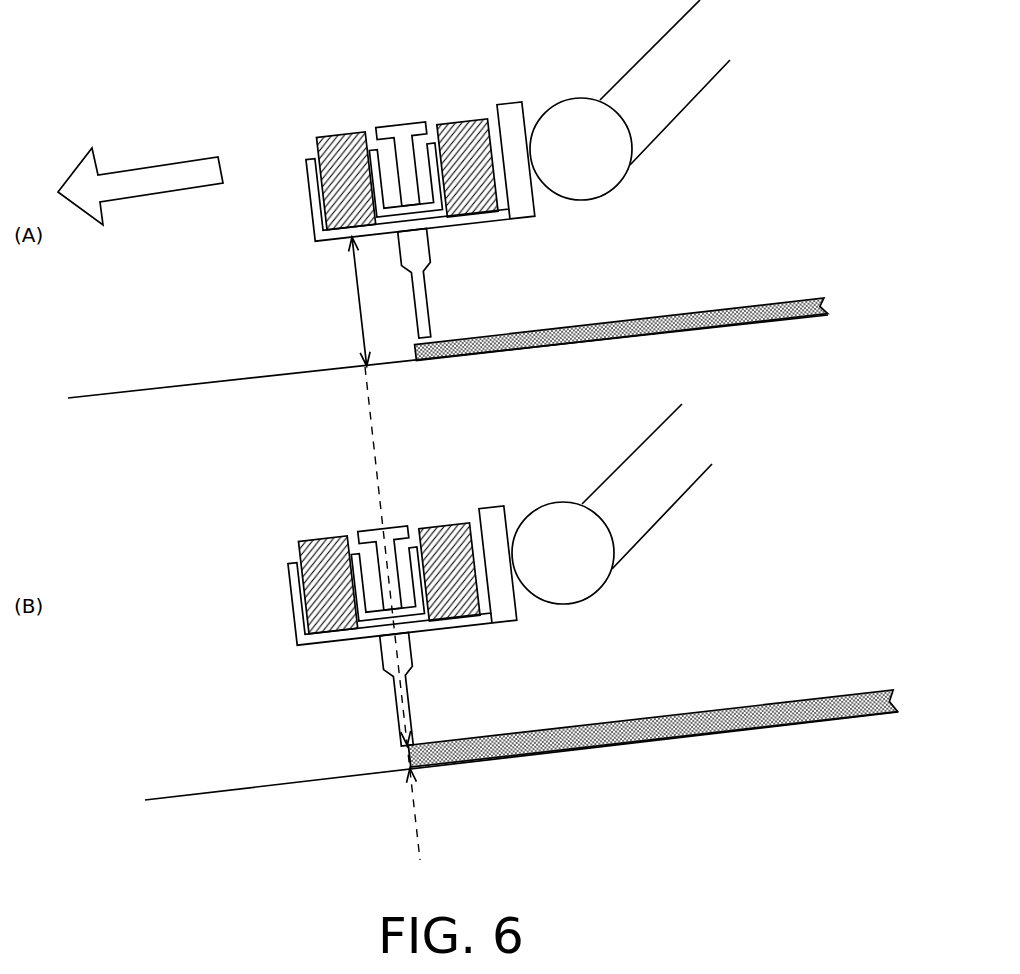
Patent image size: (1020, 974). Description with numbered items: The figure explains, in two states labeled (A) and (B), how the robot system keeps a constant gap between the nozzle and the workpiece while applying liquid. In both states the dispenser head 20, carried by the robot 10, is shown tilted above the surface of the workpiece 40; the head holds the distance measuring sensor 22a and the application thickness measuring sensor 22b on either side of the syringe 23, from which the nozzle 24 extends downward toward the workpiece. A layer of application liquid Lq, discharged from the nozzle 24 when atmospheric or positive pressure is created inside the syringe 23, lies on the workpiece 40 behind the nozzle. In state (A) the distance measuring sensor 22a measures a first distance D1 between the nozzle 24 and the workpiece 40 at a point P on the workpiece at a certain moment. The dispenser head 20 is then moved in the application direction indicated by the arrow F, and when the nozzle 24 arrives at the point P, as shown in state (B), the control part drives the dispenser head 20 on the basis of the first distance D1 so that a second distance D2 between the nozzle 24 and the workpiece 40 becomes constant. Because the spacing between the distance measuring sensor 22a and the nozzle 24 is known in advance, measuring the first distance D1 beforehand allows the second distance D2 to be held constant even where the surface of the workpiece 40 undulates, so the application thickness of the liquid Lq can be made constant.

The robot 10 is at (667, 108).
The dispenser head 20 is at (288, 125).
The distance measuring sensor 22a is at (338, 140).
The application thickness measuring sensor 22b is at (460, 130).
The syringe 23 is at (402, 152).
The nozzle 24 is at (427, 312).
The workpiece 40 is at (197, 382).
The application liquid Lq is at (678, 318).
The arrow indicating application direction F is at (140, 180).
The point on the workpiece P is at (360, 363).
The first distance D1 is at (372, 301).
The second distance D2 is at (430, 752).